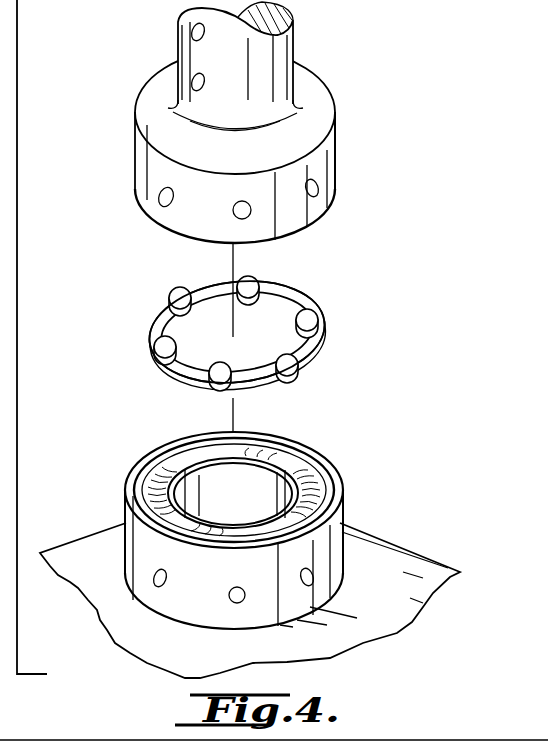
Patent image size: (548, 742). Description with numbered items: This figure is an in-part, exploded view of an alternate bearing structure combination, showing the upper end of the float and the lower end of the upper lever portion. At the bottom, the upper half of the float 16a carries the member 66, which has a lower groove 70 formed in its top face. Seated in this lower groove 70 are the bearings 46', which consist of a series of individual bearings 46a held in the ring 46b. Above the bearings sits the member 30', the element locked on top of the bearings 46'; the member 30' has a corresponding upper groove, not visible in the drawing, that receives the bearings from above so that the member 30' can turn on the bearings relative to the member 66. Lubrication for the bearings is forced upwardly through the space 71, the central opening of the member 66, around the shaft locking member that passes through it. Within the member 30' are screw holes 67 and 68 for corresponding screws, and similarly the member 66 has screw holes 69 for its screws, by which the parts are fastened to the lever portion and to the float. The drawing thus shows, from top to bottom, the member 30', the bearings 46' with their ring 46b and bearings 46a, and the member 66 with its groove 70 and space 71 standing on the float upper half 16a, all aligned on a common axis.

The screw hole 67 is at (192, 30).
The element locked on top of the bearings 30' is at (266, 66).
The screw hole 68 is at (160, 193).
The bearings 46' is at (281, 314).
The ring 46b is at (283, 291).
The bearings 46a is at (312, 308).
The space 71 is at (247, 482).
The lower groove 70 is at (298, 472).
The member 66 is at (145, 553).
The screw holes 69 is at (153, 575).
The upper half of the float 16a is at (370, 547).